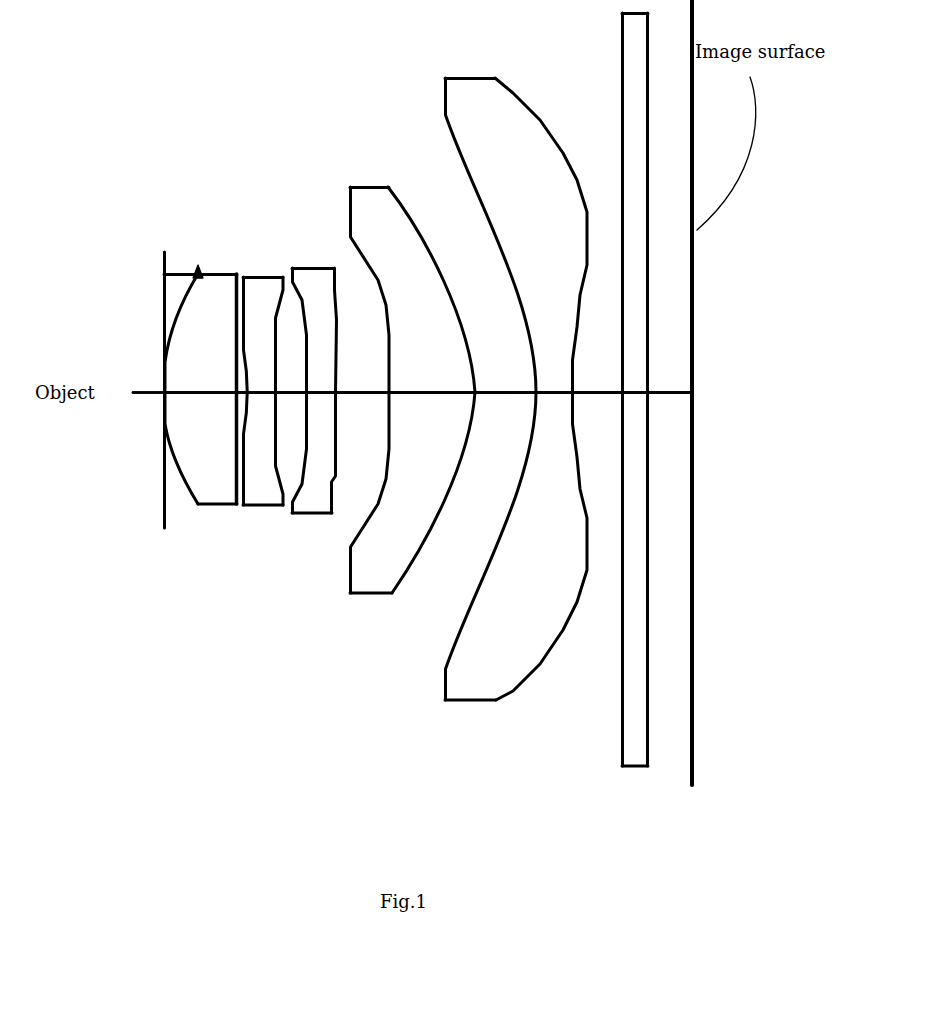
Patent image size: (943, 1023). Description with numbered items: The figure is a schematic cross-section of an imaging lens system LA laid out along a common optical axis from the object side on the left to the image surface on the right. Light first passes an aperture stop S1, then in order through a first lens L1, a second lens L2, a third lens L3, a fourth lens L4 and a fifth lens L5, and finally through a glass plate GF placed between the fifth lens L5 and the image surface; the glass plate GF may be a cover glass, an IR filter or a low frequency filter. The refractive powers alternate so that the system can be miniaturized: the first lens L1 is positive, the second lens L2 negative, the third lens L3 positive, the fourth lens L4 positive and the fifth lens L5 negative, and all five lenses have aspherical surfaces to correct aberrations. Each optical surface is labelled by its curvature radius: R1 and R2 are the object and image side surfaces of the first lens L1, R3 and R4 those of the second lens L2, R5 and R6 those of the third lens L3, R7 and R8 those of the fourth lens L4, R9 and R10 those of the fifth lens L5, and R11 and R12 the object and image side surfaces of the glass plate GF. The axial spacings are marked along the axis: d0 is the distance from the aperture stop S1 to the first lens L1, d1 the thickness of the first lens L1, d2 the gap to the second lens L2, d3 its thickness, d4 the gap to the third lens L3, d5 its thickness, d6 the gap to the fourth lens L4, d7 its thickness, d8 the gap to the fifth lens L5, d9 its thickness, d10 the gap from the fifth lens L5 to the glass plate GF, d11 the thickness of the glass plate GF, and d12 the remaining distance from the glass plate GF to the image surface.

The imaging lens system LA is at (209, 85).
The aperture stop S1 is at (194, 273).
The first lens L1 is at (170, 443).
The second lens L2 is at (250, 276).
The third lens L3 is at (331, 270).
The fourth lens L4 is at (404, 415).
The fifth lens L5 is at (495, 427).
The glass plate GF is at (637, 190).
The curvature radius of the object side surface of the first lens R1 is at (168, 450).
The curvature radius of the image side surface of the first lens R2 is at (236, 432).
The curvature radius of the object side surface of the second lens R3 is at (250, 452).
The curvature radius of the image side surface of the second lens R4 is at (278, 445).
The curvature radius of the object side surface of the third lens R5 is at (300, 478).
The curvature radius of the image side surface of the third lens R6 is at (331, 490).
The curvature radius of the object side surface of the fourth lens R7 is at (348, 594).
The curvature radius of the image side surface of the fourth lens R8 is at (392, 594).
The curvature radius of the object side surface of the fifth lens R9 is at (510, 505).
The curvature radius of the image side surface of the fifth lens R10 is at (578, 503).
The curvature radius of the object side surface of the glass plate R11 is at (621, 615).
The curvature radius of the image side surface of the glass plate R12 is at (648, 615).
The axial distance between the aperture stop and the object side surface of the firs d0 is at (192, 275).
The axial thickness of the first lens d1 is at (200, 383).
The axial distance between the first lens and the second lens d2 is at (240, 390).
The axial thickness of the second lens d3 is at (263, 390).
The axial distance between the second lens and the third lens d4 is at (290, 383).
The axial thickness of the third lens d5 is at (318, 390).
The axial distance between the third lens and the fourth lens d6 is at (362, 383).
The axial thickness of the fourth lens d7 is at (432, 383).
The axial distance between the fourth lens and the fifth lens d8 is at (505, 383).
The axial thickness of the fifth lens d9 is at (554, 383).
The axial distance between the fifth lens and the glass plate d10 is at (597, 383).
The axial thickness of the glass plate d11 is at (640, 392).
The axial distance between the glass plate and the image surface d12 is at (670, 383).